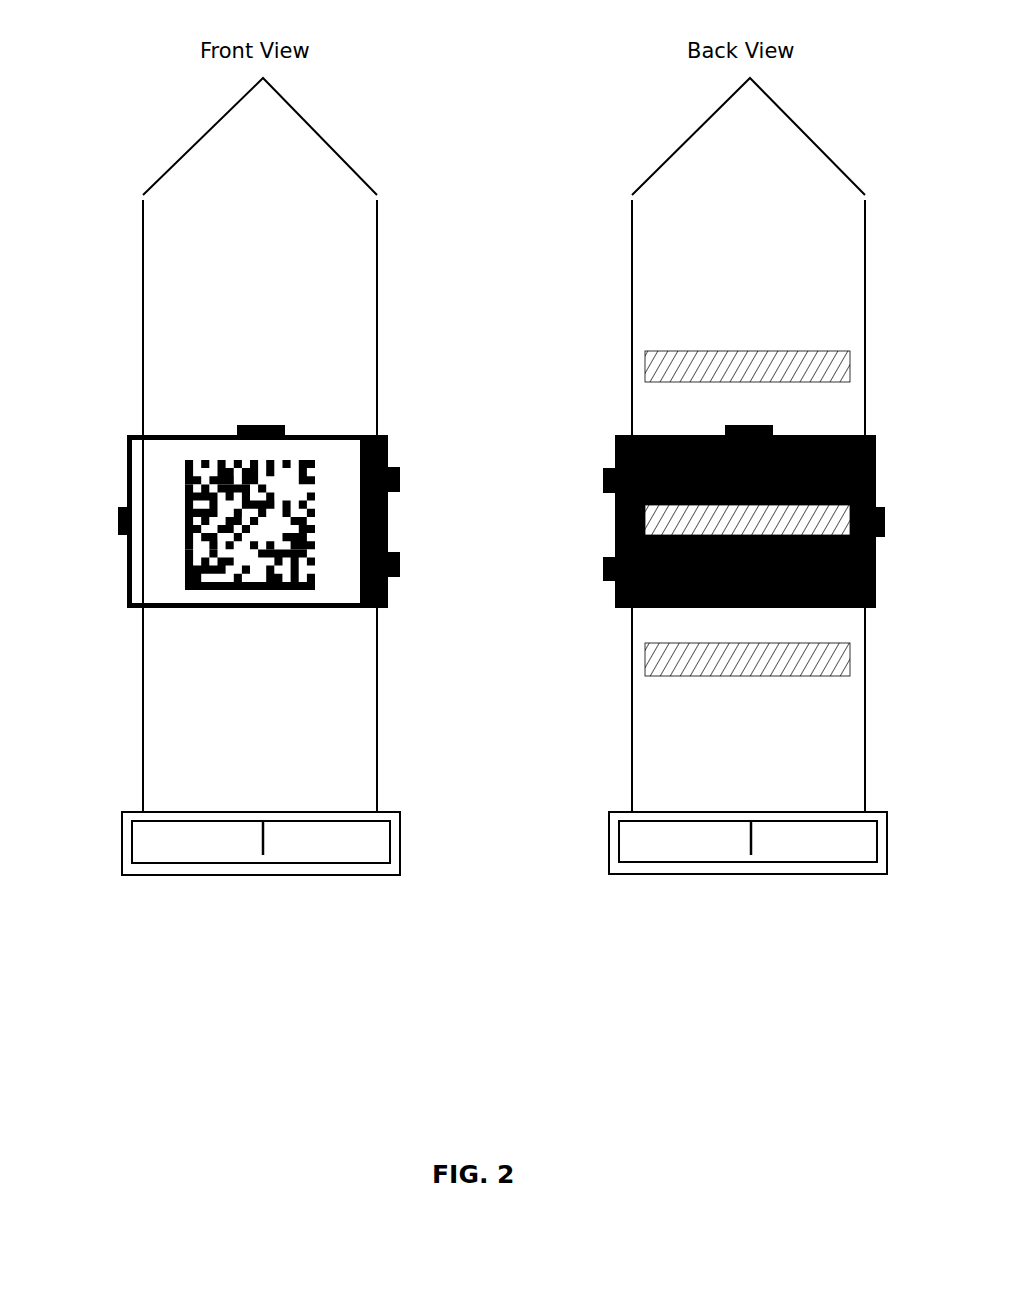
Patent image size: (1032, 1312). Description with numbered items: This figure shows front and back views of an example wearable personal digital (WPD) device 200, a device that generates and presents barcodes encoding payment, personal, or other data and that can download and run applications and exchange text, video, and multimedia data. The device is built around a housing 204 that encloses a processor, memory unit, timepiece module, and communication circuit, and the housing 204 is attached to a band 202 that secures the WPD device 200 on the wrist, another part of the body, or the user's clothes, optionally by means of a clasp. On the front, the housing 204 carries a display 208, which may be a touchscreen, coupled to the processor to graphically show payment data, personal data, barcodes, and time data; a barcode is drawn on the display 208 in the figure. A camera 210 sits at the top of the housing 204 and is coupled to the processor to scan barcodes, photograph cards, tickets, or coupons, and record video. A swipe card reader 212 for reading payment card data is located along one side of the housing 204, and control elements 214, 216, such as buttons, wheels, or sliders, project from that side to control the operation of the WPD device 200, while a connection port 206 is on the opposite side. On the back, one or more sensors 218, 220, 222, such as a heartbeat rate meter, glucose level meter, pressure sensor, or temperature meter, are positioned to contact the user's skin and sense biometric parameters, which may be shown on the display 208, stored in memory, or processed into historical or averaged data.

The WPD device 200 is at (890, 38).
The band 202 is at (142, 345).
The housing 204 is at (127, 437).
The connection port 206 is at (120, 520).
The display 208 is at (145, 580).
The camera 210 is at (263, 425).
The swipe card reader 212 is at (377, 433).
The control element 214 is at (401, 480).
The control element 216 is at (401, 565).
The sensor 218 is at (643, 363).
The sensor 220 is at (614, 525).
The sensor 222 is at (643, 656).